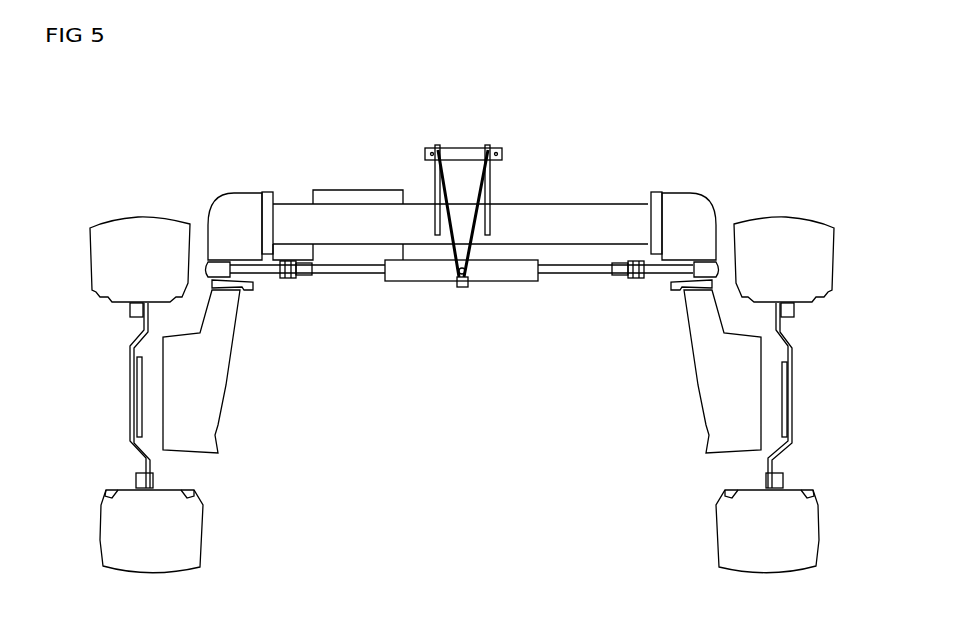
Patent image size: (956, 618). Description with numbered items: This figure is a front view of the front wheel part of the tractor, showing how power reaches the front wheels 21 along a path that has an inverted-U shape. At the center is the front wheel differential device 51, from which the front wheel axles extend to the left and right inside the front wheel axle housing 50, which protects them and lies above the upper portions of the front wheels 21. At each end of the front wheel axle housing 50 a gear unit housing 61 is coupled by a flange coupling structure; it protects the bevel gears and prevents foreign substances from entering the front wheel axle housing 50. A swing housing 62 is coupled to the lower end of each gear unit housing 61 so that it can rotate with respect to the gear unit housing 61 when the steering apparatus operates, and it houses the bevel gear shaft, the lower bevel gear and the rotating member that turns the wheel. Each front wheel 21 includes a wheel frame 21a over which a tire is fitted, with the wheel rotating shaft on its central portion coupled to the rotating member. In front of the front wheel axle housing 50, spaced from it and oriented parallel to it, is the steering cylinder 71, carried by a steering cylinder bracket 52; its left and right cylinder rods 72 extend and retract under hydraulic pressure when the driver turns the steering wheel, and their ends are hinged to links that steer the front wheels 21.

The front wheel 21 is at (139, 227).
The wheel frame 21a is at (132, 356).
The front wheel axle housing 50 is at (598, 210).
The front wheel differential device 51 is at (360, 205).
The steering cylinder bracket 52 is at (490, 190).
The gear unit housing 61 is at (242, 212).
The swing housing 62 is at (225, 352).
The steering cylinder 71 is at (423, 283).
The cylinder rod 72 is at (352, 282).